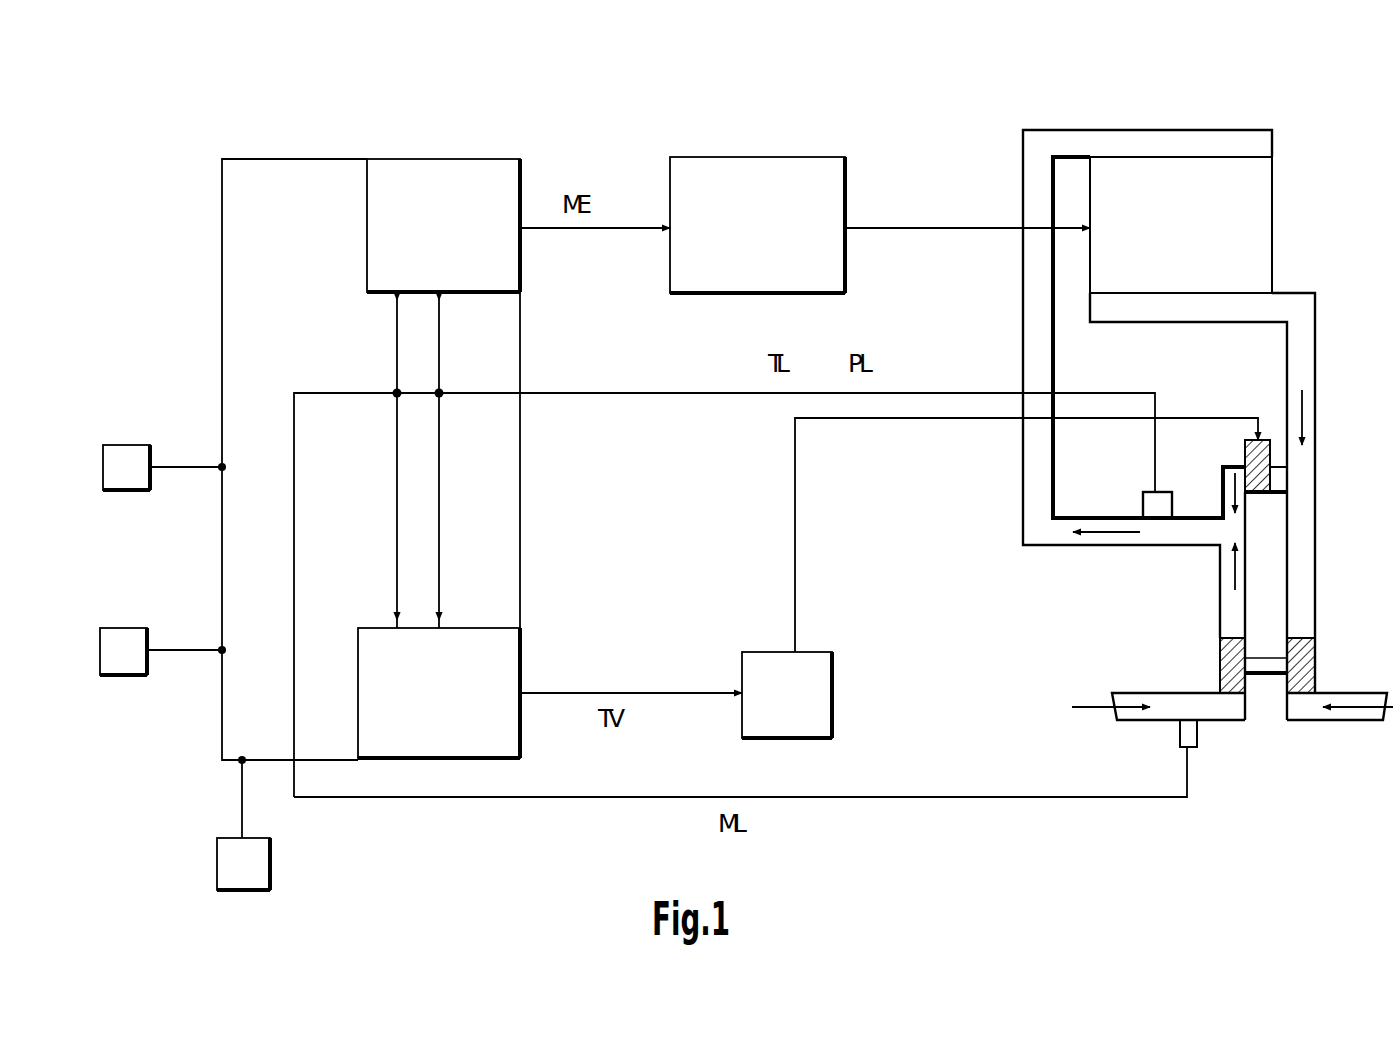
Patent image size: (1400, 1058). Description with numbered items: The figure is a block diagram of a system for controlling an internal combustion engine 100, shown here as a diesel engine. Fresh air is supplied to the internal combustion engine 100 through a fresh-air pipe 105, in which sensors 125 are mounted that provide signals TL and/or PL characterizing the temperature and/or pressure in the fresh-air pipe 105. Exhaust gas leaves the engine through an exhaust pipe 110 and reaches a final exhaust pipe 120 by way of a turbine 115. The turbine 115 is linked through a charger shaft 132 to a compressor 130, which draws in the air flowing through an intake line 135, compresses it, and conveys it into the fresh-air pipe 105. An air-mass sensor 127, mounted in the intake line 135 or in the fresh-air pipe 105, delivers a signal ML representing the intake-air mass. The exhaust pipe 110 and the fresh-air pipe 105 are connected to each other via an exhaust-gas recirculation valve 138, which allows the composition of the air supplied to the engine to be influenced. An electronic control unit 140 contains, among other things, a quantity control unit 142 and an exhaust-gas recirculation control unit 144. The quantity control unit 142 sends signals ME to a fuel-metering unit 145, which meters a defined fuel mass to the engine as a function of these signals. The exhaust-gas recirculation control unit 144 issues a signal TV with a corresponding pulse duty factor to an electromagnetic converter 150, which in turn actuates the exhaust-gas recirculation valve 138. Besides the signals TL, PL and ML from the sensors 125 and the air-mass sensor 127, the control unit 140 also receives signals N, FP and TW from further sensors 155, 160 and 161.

The internal combustion engine 100 is at (1265, 222).
The fresh-air pipe 105 is at (1205, 142).
The exhaust pipe 110 is at (1188, 320).
The turbine 115 is at (1305, 665).
The final exhaust pipe 120 is at (1355, 710).
The sensors 125 is at (1143, 505).
The air-mass sensor 127 is at (1195, 738).
The compressor 130 is at (1220, 665).
The charger shaft 132 is at (1270, 665).
The intake line 135 is at (1163, 710).
The exhaust-gas recirculation valve 138 is at (1245, 452).
The electronic control unit 140 is at (278, 165).
The quantity control unit 142 is at (430, 165).
The exhaust-gas recirculation control unit 144 is at (425, 745).
The fuel-metering unit 145 is at (738, 165).
The electromagnetic converter 150 is at (820, 700).
The sensor 155 is at (132, 445).
The sensor 160 is at (135, 675).
The sensor 161 is at (250, 886).